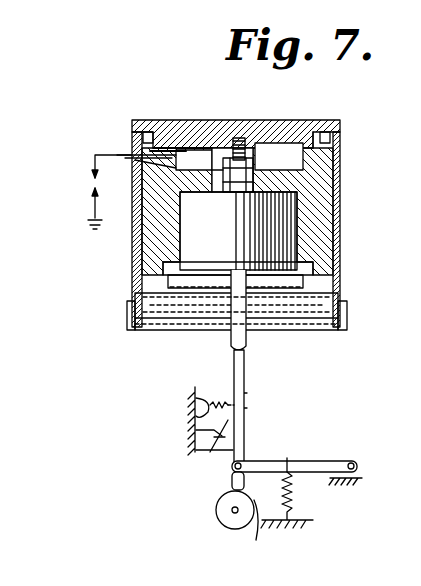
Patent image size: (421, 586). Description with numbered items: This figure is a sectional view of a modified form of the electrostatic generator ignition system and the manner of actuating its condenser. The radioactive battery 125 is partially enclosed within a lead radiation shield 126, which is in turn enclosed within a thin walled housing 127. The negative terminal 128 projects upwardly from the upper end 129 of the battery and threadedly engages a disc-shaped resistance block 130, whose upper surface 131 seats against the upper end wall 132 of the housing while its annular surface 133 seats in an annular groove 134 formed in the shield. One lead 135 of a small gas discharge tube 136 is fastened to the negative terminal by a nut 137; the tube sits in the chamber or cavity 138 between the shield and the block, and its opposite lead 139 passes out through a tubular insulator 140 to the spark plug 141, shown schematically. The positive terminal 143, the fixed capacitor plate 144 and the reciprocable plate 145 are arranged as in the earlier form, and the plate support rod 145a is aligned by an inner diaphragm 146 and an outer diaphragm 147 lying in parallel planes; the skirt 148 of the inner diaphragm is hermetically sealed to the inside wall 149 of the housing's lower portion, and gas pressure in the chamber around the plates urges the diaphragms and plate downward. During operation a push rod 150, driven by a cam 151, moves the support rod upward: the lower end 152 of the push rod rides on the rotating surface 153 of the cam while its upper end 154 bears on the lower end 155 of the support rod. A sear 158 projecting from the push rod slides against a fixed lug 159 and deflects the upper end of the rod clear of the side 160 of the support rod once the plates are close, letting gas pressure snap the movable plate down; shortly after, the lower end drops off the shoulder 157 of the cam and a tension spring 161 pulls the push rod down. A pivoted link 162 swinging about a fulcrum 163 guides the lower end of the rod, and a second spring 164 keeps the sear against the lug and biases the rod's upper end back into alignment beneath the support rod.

The radioactive battery 125 is at (214, 244).
The radiation shield 126 is at (330, 180).
The thin walled housing 127 is at (340, 217).
The negative terminal 128 is at (243, 140).
The upper end 129 is at (247, 192).
The resistance block 130 is at (197, 137).
The upper surface 131 is at (178, 132).
The upper end wall 132 is at (163, 122).
The annular surface 133 is at (317, 143).
The annular groove 134 is at (335, 147).
The lead 135 is at (215, 187).
The gas discharge tube 136 is at (184, 160).
The nut 137 is at (253, 166).
The chamber or cavity 138 is at (203, 148).
The opposite lead 139 is at (125, 155).
The tubular insulator 140 is at (137, 147).
The spark plug 141 is at (92, 184).
The positive terminal 143 is at (238, 280).
The fixed capacitor plate 144 is at (290, 282).
The reciprocable plate 145 is at (180, 312).
The plate support rod 145a is at (248, 337).
The inner diaphragm 146 is at (135, 313).
The outer diaphragm 147 is at (170, 300).
The skirt 148 is at (332, 310).
The inside wall 149 is at (322, 327).
The push rod 150 is at (244, 397).
The cam 151 is at (343, 318).
The lower end 152 is at (338, 292).
The rotating surface 153 is at (145, 294).
The upper end 154 is at (237, 357).
The lower end 155 is at (232, 340).
The shoulder 157 is at (253, 553).
The sear 158 is at (225, 448).
The fixed lug 159 is at (200, 440).
The side 160 is at (248, 350).
The tension spring 161 is at (297, 495).
The pivoted link 162 is at (312, 463).
The fulcrum 163 is at (360, 467).
The second spring 164 is at (205, 408).